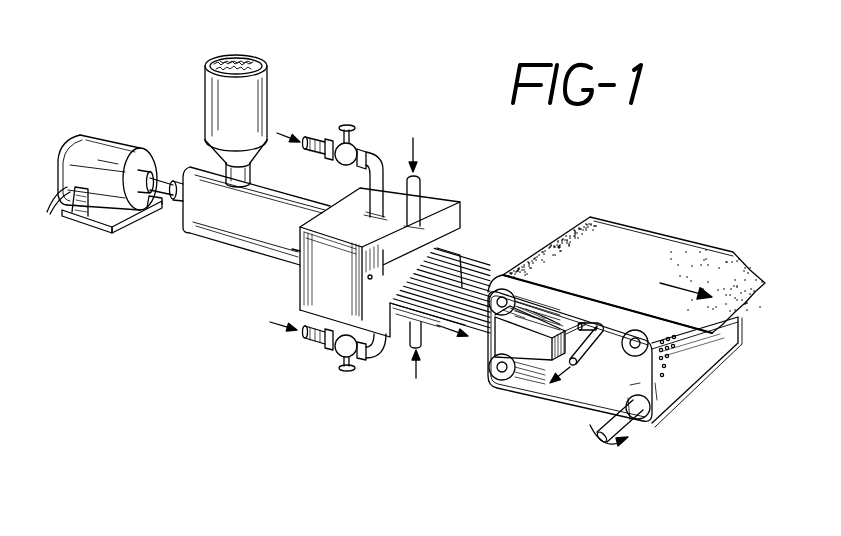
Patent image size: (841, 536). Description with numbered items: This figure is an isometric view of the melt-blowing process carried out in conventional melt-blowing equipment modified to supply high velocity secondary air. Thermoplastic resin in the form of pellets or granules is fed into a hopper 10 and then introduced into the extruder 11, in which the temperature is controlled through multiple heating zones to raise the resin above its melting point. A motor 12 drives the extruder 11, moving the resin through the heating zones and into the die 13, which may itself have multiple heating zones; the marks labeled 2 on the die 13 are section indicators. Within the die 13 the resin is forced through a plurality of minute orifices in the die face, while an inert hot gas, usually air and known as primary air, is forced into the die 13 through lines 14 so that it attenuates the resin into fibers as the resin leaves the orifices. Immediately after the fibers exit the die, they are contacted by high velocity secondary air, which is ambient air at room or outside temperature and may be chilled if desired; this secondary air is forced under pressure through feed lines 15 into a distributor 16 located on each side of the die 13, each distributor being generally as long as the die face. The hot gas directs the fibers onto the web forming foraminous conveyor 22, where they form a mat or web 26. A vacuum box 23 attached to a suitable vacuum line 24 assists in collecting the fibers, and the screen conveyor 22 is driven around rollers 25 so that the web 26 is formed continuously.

The hopper 10 is at (268, 74).
The extruder 11 is at (215, 222).
The motor 12 is at (120, 143).
The die 13 is at (346, 289).
The lines 14 is at (323, 140).
The feed lines 15 is at (423, 178).
The distributor 16 is at (458, 218).
The section line 2- 2 is at (320, 212).
The web forming foraminous conveyor 22 is at (550, 400).
The vacuum box 23 is at (542, 352).
The vacuum line 24 is at (587, 360).
The rollers 25 is at (637, 420).
The web 26 is at (753, 280).